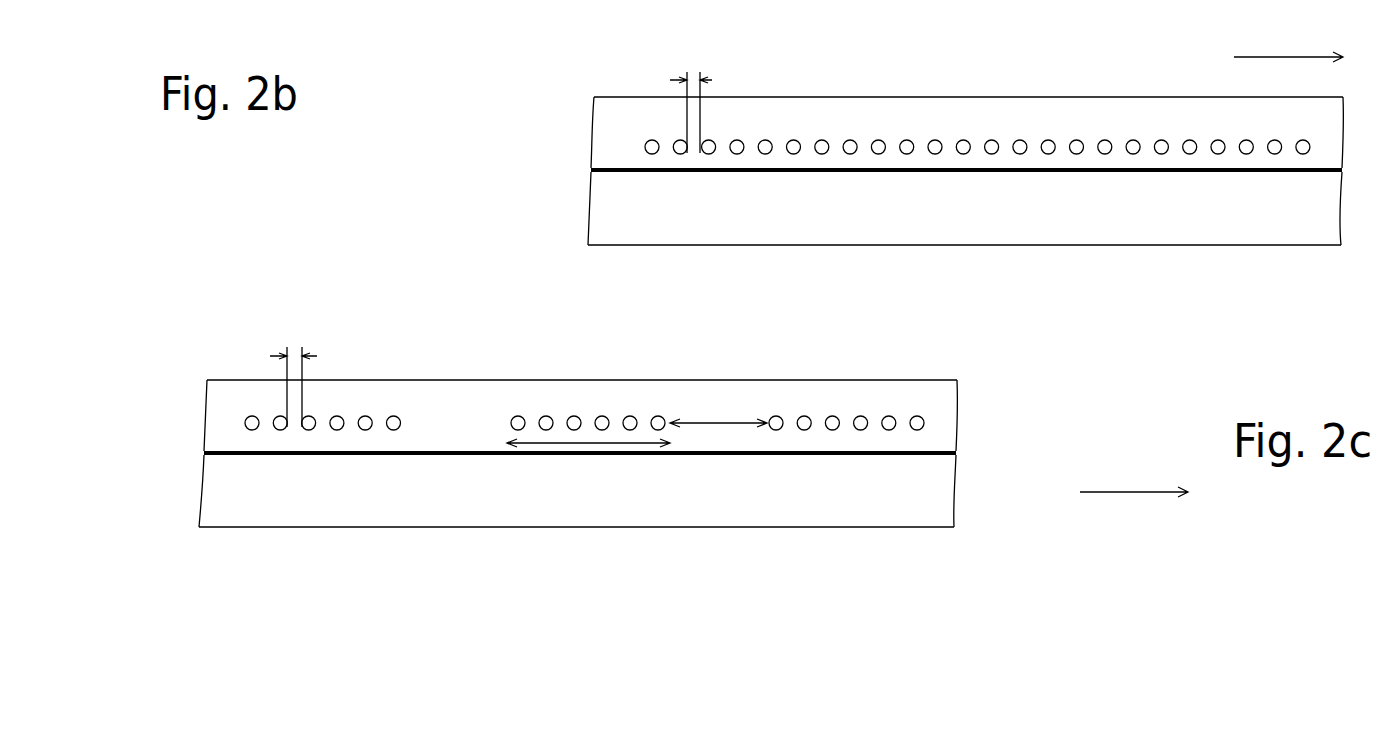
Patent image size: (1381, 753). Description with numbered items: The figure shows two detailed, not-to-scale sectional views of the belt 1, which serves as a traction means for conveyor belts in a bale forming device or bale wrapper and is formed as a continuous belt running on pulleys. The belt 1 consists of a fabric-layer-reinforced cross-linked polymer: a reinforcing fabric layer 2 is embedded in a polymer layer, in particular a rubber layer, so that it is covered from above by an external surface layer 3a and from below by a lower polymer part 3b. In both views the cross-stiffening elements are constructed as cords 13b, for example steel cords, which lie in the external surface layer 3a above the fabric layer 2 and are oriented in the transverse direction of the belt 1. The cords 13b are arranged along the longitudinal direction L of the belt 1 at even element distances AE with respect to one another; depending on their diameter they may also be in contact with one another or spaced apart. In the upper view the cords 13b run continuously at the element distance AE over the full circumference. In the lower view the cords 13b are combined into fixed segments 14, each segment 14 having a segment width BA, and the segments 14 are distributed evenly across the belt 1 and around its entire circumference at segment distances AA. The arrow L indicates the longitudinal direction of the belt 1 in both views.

In FIG. 2b, the belt 1 is at (608, 53).
In FIG. 2c, the belt 1 is at (1086, 363).
In FIG. 2b, the reinforcing fabric layer 2 is at (612, 166).
In FIG. 2c, the reinforcing fabric layer 2 is at (947, 453).
In FIG. 2b, the external surface layer 3a is at (612, 127).
In FIG. 2c, the external surface layer 3a is at (950, 413).
In FIG. 2b, the polymer layer part below the fabric layer 3b is at (612, 210).
In FIG. 2c, the polymer layer part below the fabric layer 3b is at (933, 502).
In FIG. 2b, the cords 13b is at (906, 140).
In FIG. 2c, the cords 13b is at (518, 416).
In FIG. 2c, the segments 14 is at (268, 384).
In FIG. 2b, the element distance AE is at (752, 53).
In FIG. 2c, the element distance AE is at (352, 330).
In FIG. 2c, the segment width BA is at (600, 445).
In FIG. 2c, the segment distance AA is at (715, 423).
In FIG. 2b, the longitudinal direction L is at (1288, 32).
In FIG. 2c, the longitudinal direction L is at (1134, 468).